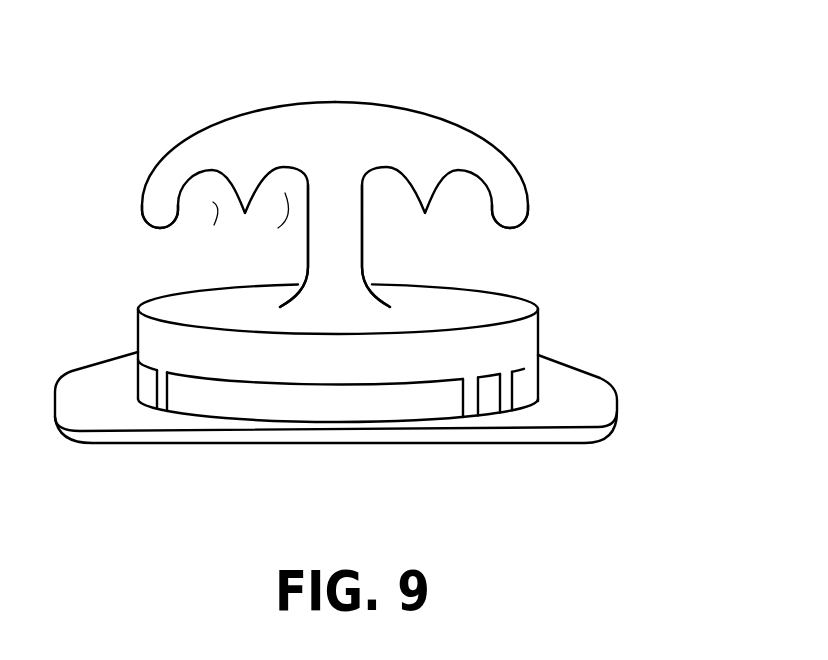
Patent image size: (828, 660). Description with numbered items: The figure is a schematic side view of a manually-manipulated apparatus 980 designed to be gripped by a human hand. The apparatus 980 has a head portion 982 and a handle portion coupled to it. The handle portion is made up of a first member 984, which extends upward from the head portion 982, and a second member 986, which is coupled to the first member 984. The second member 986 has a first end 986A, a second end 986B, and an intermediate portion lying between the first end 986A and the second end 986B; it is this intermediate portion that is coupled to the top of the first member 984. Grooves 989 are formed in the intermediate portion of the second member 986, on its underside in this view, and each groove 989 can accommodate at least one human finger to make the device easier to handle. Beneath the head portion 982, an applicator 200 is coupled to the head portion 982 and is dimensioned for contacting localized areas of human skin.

The apparatus 980 is at (580, 82).
The second member 986 is at (298, 100).
The first end 986A is at (142, 187).
The second end 986B is at (525, 178).
The grooves 989 is at (278, 228).
The first member 984 is at (365, 257).
The head portion 982 is at (518, 297).
The applicator 200 is at (562, 390).